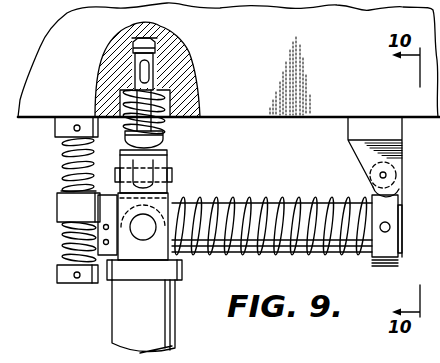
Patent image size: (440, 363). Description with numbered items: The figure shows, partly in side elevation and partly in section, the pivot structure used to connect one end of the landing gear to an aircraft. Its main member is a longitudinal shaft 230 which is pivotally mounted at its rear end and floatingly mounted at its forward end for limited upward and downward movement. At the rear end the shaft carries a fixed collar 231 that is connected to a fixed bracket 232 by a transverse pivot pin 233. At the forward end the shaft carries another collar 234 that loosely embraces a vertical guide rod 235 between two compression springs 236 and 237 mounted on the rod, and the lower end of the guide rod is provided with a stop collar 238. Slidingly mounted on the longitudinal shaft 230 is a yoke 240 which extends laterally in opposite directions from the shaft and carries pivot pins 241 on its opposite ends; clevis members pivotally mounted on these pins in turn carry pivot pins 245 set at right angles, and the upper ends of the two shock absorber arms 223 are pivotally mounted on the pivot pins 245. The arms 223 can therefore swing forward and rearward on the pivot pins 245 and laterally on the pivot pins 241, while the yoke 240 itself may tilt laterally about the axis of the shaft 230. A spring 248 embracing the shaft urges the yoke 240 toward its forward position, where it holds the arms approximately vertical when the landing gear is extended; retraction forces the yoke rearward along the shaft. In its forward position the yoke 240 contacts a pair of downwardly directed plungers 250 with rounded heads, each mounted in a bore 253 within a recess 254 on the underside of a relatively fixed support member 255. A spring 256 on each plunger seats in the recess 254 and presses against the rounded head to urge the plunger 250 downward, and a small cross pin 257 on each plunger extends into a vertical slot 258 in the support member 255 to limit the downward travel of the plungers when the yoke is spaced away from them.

The shock absorber arm 223 is at (111, 336).
The longitudinal shaft 230 is at (265, 207).
The collar 231 is at (378, 265).
The fixed bracket 232 is at (348, 140).
The transverse pivot pin 233 is at (380, 175).
The collar 234 is at (58, 214).
The vertical guide rod 235 is at (66, 186).
The compression spring 236 is at (62, 155).
The compression spring 237 is at (63, 246).
The stop collar 238 is at (62, 276).
The yoke 240 is at (167, 152).
The pivot pin 241 is at (170, 176).
The pivot pin 245 is at (153, 222).
The spring 248 is at (290, 236).
The plunger 250 is at (164, 126).
The bore 253 is at (156, 46).
The recess 254 is at (197, 101).
The support member 255 is at (346, 71).
The spring 256 is at (189, 80).
The cross pin 257 is at (146, 76).
The vertical slot 258 is at (137, 68).